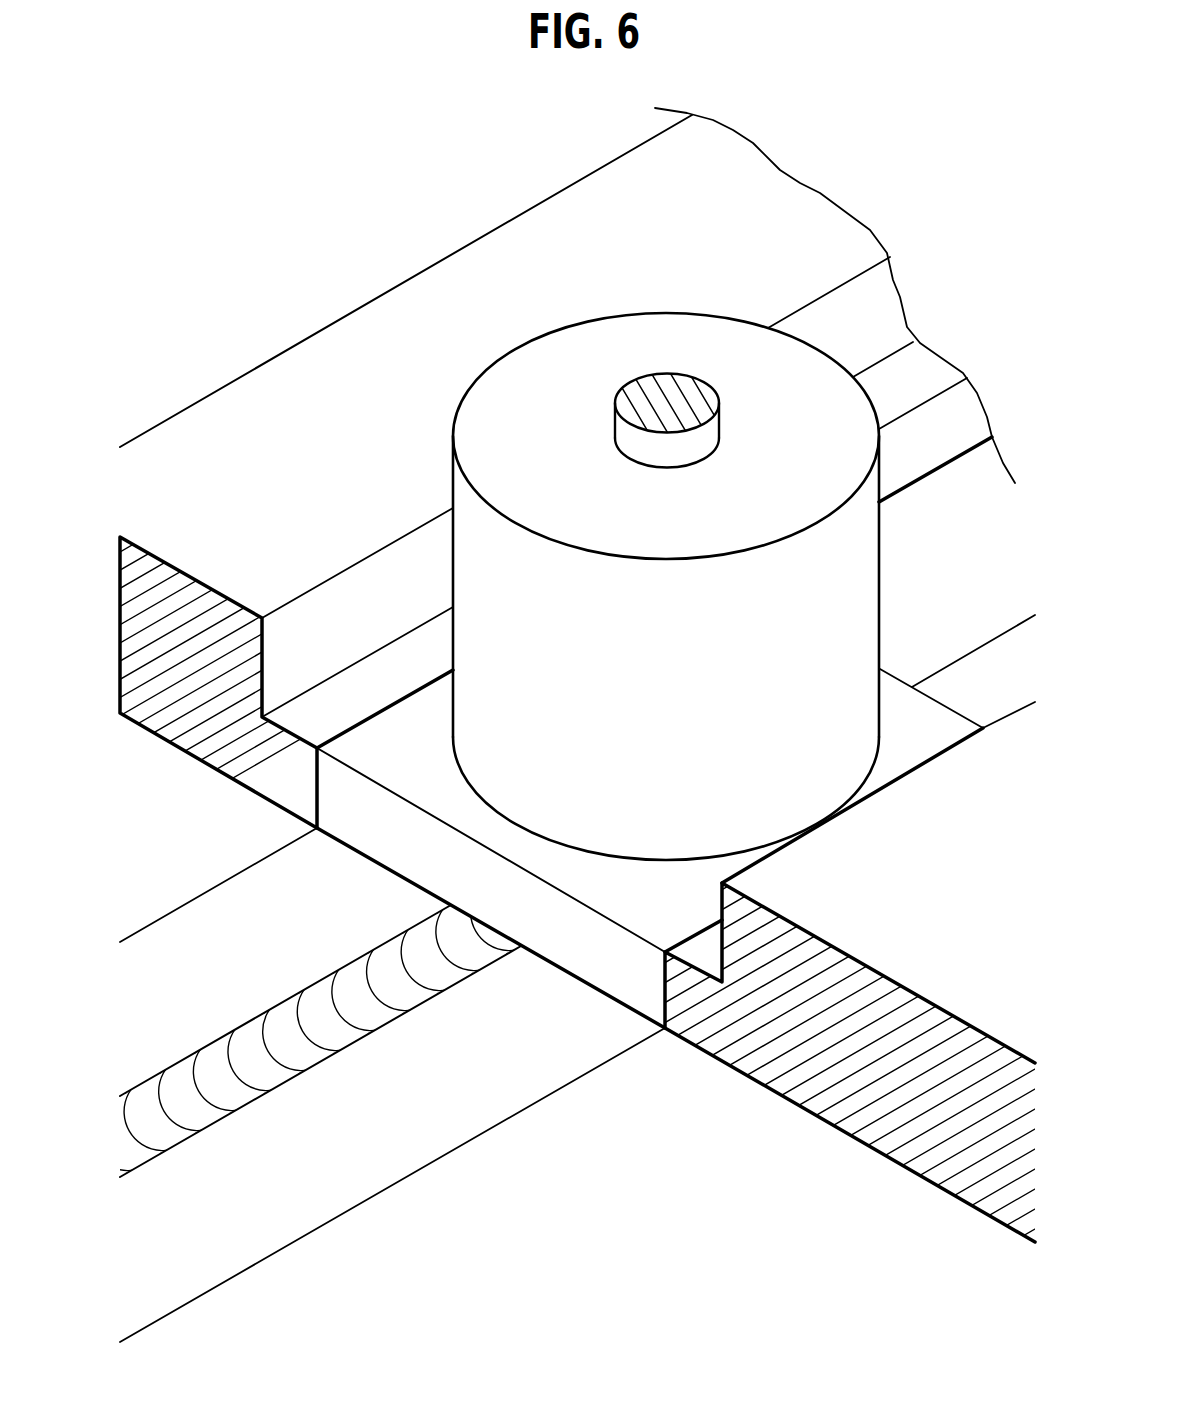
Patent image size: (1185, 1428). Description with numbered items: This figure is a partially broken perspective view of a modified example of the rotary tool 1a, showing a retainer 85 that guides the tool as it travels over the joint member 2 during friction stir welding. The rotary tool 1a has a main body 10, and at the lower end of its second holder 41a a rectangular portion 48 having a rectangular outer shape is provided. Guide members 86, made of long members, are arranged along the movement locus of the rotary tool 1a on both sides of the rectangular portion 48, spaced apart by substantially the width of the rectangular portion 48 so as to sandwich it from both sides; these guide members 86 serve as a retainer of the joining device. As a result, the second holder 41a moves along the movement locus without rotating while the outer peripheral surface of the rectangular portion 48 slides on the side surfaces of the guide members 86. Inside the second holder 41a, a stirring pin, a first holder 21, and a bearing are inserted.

The rotary tool 1a is at (505, 270).
The main body 10 is at (867, 335).
The first holder 21 is at (667, 387).
The second holder 41a is at (520, 377).
The rectangular portion 48 is at (652, 889).
The guide members 86 is at (247, 437).
The retainer 85 is at (734, 1140).
The joint member 2 is at (217, 984).